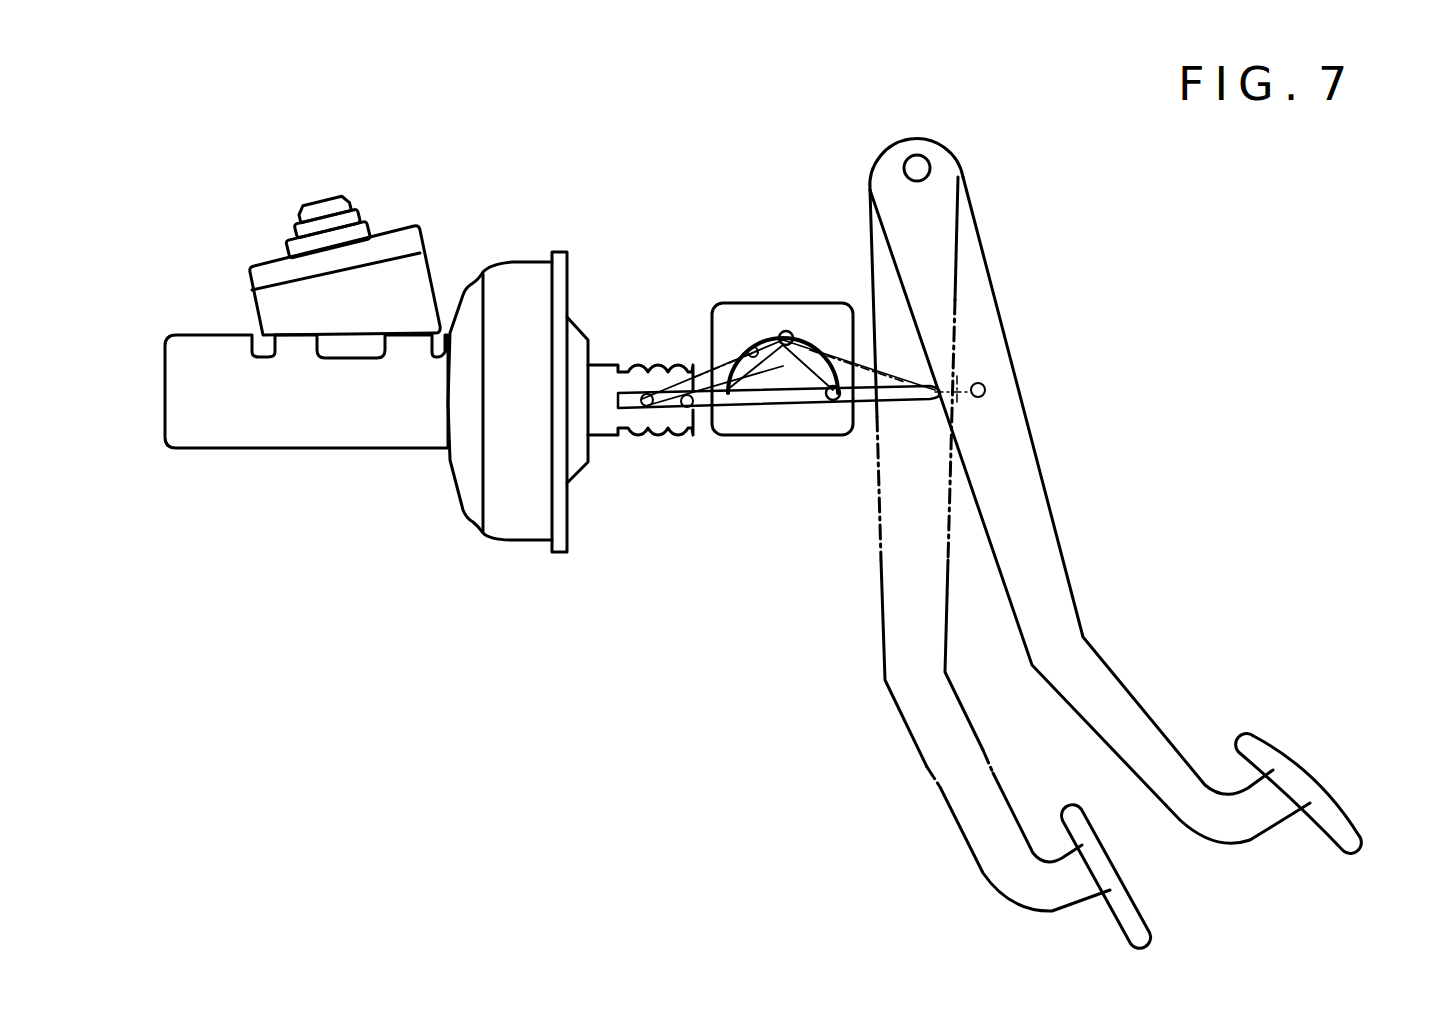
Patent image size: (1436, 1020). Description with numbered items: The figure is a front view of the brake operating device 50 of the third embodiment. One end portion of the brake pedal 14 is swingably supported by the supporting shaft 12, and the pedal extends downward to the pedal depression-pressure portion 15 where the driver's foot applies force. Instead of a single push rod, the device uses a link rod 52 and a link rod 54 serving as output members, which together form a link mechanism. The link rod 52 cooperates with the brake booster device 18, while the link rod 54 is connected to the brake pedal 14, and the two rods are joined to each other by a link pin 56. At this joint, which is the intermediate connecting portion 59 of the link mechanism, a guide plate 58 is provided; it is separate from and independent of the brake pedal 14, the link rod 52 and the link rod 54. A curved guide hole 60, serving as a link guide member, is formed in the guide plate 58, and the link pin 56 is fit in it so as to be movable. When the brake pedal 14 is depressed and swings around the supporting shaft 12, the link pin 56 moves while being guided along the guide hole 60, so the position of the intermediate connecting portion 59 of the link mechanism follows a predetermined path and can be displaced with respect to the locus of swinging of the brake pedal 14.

The supporting shaft 12 is at (920, 166).
The brake pedal 14 is at (1065, 532).
The pedal depression-pressure portion 15 is at (1337, 787).
The brake booster device 18 is at (490, 250).
The brake operating device 50 is at (646, 232).
The link rod 52 is at (707, 368).
The link rod 54 is at (860, 362).
The link pin 56 is at (790, 330).
The guide plate 58 is at (727, 437).
The intermediate connecting portion 59 is at (790, 332).
The guide hole 60 is at (751, 347).